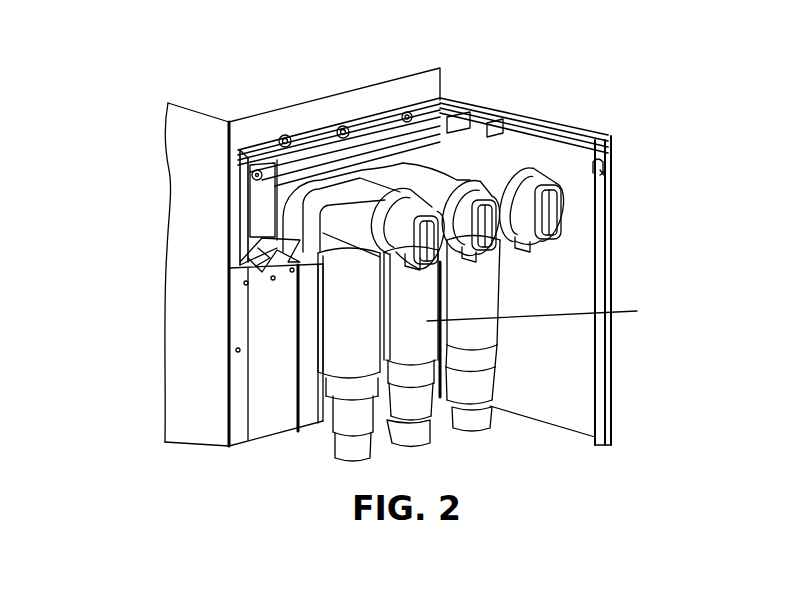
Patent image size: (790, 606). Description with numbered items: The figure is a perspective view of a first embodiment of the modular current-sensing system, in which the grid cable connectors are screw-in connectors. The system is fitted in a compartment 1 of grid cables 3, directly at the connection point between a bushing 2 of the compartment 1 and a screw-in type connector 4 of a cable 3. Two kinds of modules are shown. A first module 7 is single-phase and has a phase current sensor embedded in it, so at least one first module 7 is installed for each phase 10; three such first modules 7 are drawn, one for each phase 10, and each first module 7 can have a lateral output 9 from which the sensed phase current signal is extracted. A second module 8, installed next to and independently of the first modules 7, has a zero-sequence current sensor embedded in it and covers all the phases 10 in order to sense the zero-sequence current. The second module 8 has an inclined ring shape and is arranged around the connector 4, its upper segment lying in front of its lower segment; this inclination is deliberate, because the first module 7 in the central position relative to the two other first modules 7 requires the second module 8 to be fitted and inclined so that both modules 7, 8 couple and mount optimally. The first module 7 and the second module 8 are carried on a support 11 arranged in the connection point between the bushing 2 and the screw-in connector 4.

The compartment 1 is at (272, 322).
The bushing 2 is at (325, 105).
The grid cable 3 is at (440, 420).
The connector 4 is at (345, 340).
The first module 7 is at (260, 212).
The second module 8 is at (480, 133).
The lateral output 9 is at (252, 174).
The phase 10 is at (282, 137).
The support 11 is at (270, 235).